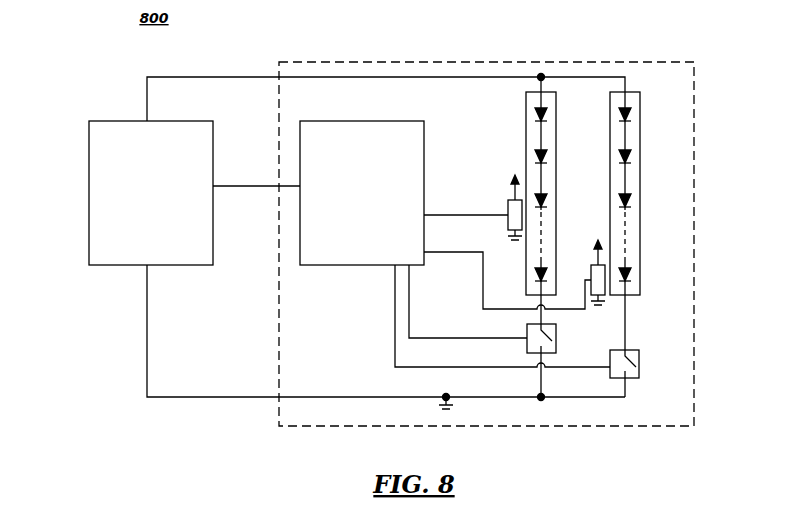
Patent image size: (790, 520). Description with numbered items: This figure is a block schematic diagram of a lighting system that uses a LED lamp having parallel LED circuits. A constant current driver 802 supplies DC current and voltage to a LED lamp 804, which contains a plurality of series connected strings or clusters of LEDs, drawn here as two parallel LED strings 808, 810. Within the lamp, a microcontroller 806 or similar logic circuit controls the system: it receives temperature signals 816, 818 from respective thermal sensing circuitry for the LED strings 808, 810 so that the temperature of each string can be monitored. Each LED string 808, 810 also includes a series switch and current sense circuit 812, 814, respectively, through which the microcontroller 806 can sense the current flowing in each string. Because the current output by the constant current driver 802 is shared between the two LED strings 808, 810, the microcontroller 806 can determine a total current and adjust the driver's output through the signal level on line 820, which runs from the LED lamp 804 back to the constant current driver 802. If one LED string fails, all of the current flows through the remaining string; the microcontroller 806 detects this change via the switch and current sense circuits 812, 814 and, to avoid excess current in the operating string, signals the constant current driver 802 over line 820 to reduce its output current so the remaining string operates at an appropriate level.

The constant current driver 802 is at (107, 120).
The LED lamp 804 is at (334, 61).
The microcontroller 806 is at (347, 120).
The LED string 808 is at (526, 114).
The LED string 810 is at (640, 116).
The series switch and current sense circuit 812 is at (556, 346).
The series switch and current sense circuit 814 is at (639, 372).
The temperature signal 816 is at (450, 215).
The temperature signal 818 is at (483, 292).
The line 820 is at (237, 186).